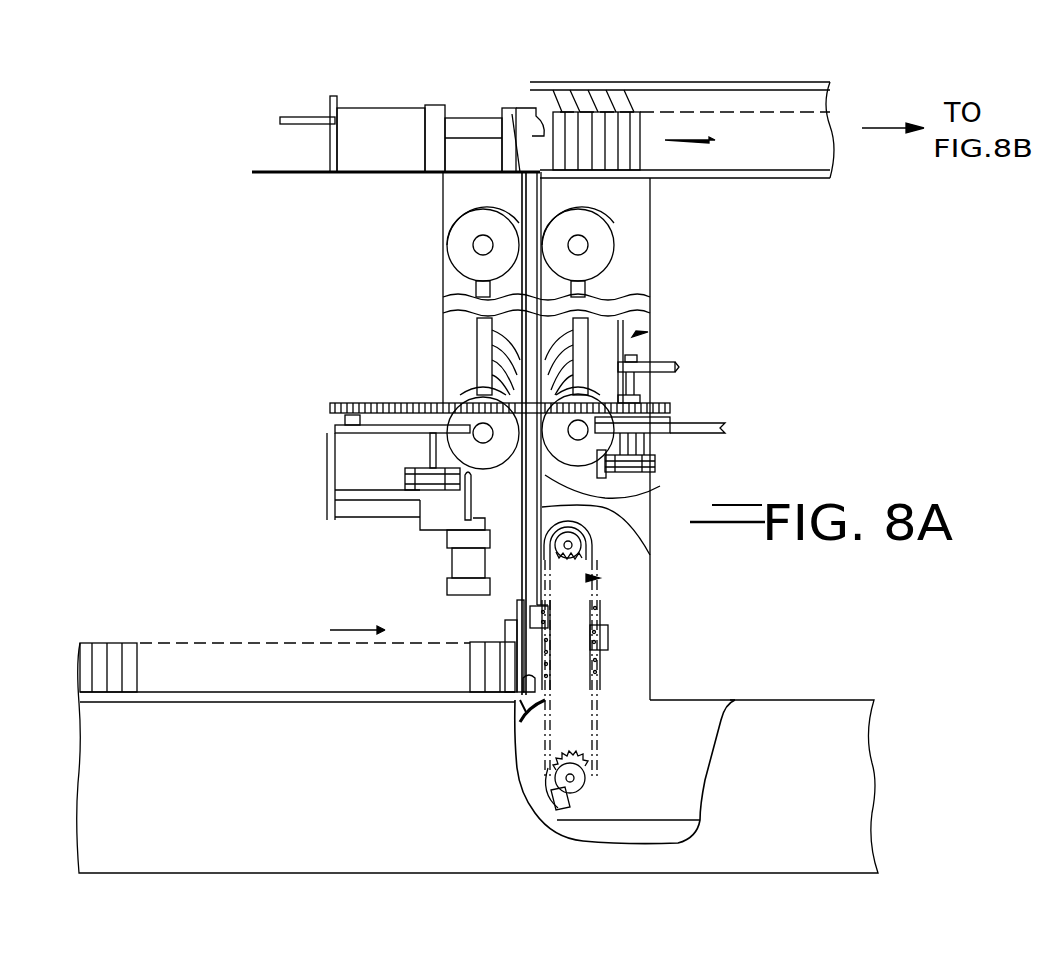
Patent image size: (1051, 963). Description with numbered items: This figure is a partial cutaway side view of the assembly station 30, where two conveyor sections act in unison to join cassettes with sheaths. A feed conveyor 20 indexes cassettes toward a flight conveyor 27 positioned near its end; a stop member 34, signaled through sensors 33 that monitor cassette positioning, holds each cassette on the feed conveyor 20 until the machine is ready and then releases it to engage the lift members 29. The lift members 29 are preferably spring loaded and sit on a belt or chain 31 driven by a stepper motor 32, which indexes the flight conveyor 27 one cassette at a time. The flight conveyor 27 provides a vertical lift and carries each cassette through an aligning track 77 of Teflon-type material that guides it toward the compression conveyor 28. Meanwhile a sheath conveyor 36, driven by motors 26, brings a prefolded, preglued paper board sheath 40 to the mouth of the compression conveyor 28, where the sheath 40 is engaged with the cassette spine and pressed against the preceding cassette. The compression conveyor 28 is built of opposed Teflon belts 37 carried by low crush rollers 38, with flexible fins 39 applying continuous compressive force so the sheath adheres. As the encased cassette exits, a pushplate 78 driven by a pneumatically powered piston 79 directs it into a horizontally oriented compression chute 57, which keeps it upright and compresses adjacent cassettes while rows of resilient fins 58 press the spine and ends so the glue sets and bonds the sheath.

The feed conveyor 20 is at (170, 702).
The motors 26 is at (352, 471).
The flight conveyor 27 is at (600, 578).
The compression conveyor 28 is at (650, 336).
The lift members 29 is at (520, 611).
The assembly station 30 is at (718, 298).
The belt or chain 31 is at (608, 608).
The stepper motor 32 is at (580, 780).
The sensors 33 is at (524, 716).
The stop member 34 is at (508, 635).
The sheath conveyor 36 is at (410, 498).
The Teflon belts 37 is at (445, 270).
The low crush rollers 38 is at (465, 234).
The flexible fins 39 is at (490, 336).
The sheath 40 is at (660, 486).
The compression chute 57 is at (825, 172).
The resilient fins 58 is at (613, 97).
The aligning track 77 is at (650, 555).
The pushplate 78 is at (538, 124).
The pneumatically powered piston 79 is at (460, 124).